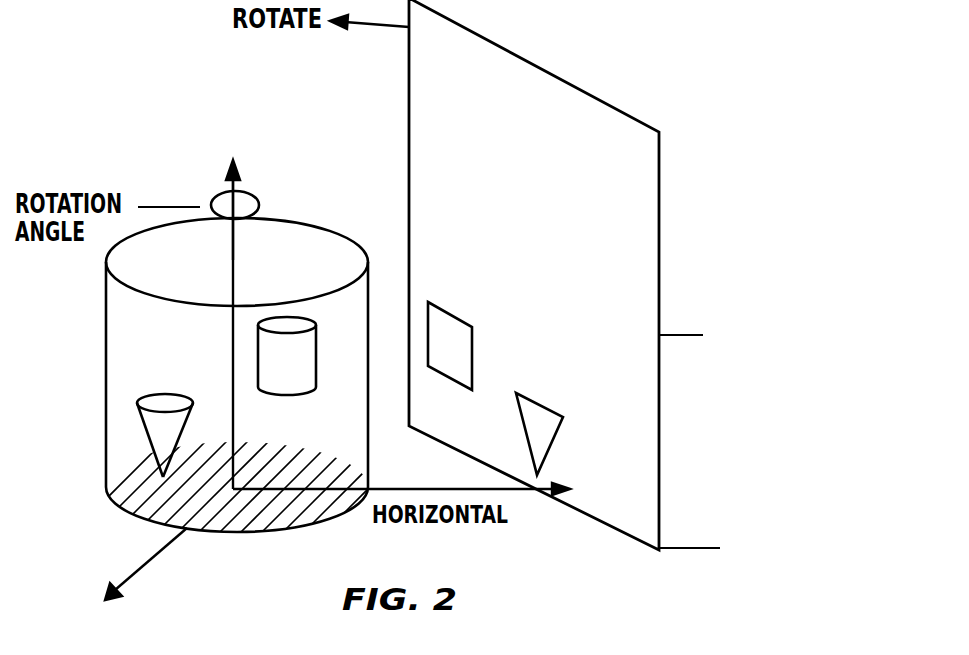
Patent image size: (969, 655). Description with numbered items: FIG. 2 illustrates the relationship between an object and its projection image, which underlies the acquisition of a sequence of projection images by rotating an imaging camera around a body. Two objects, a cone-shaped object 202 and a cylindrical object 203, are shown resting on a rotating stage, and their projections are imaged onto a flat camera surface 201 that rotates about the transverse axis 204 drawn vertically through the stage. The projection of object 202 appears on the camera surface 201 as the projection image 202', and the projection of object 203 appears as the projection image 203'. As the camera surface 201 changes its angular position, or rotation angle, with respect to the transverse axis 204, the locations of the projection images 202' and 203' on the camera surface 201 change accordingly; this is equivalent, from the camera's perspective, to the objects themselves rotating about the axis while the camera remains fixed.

The camera surface 201 is at (683, 547).
The object 202 is at (110, 435).
The object 203 is at (293, 320).
The transverse axis 204 is at (202, 88).
The projection image 202' is at (564, 419).
The projection image 203' is at (473, 321).